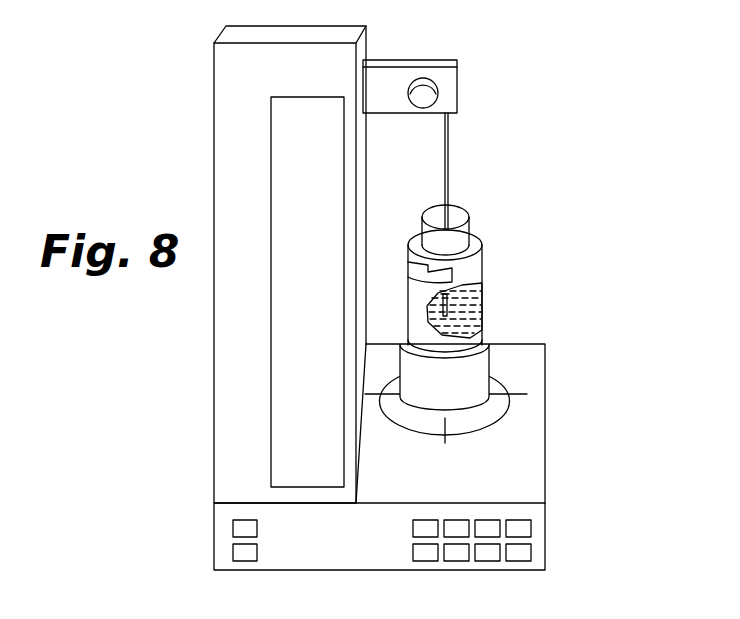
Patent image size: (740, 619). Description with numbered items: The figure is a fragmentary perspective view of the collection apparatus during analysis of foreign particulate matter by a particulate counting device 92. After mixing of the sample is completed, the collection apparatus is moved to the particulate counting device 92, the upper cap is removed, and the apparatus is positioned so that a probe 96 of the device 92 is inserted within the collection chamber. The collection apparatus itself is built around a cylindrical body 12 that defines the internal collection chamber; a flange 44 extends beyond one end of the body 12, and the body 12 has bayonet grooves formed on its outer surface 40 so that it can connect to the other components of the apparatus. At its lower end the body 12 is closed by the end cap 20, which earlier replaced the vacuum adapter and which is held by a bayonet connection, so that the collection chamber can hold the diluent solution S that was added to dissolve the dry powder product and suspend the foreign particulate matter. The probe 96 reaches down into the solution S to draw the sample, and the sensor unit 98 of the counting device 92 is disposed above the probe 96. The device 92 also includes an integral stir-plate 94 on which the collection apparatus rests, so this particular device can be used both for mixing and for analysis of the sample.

The body 12 is at (538, 241).
The end cap 20 is at (472, 401).
The outer surface 40 is at (482, 263).
The flange 44 is at (455, 240).
The particulate counting device 92 is at (565, 423).
The stir-plate 94 is at (487, 412).
The probe 96 is at (450, 160).
The sensor unit 98 is at (423, 93).
The diluent solution S is at (478, 313).